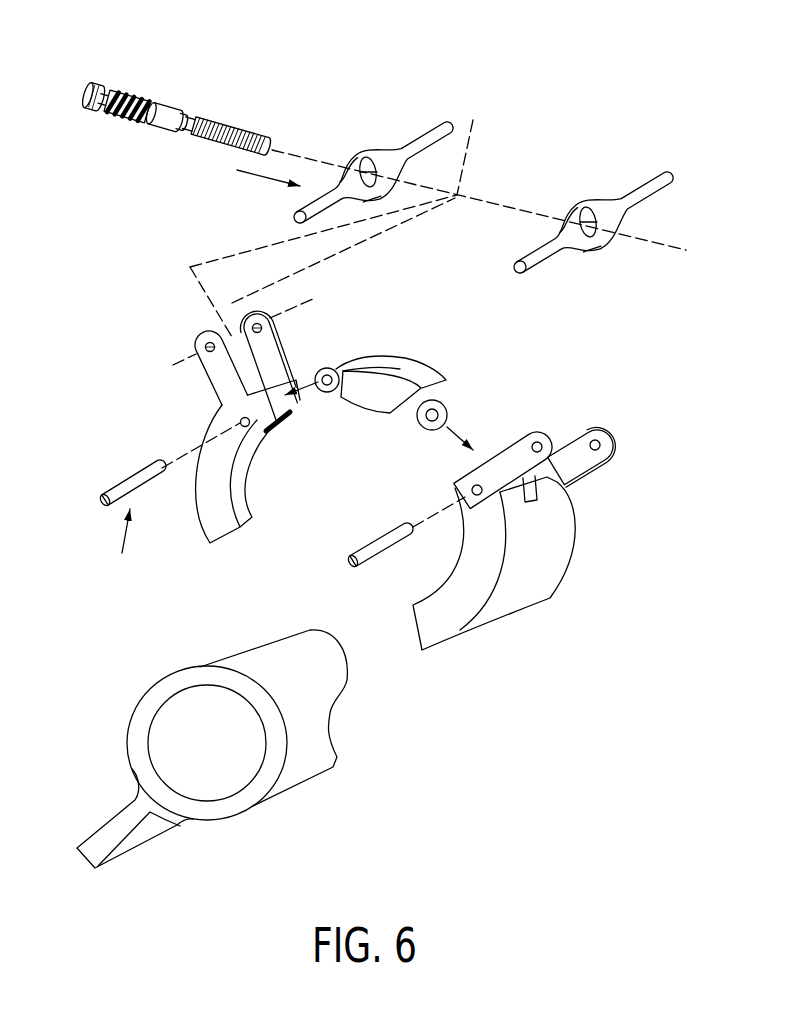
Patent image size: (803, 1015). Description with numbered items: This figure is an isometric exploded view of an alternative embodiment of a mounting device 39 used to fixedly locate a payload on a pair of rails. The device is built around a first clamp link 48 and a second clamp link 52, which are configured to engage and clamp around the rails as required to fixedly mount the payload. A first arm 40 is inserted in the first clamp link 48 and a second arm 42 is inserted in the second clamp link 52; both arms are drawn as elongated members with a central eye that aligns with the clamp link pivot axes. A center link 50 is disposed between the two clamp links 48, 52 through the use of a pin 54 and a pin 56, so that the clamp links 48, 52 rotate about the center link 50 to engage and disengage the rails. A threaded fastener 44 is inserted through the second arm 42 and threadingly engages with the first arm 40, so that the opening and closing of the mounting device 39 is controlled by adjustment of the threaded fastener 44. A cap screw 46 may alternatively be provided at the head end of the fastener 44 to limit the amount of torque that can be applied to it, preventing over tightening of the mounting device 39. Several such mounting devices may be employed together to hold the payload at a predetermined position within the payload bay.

The cap screw 46 is at (101, 88).
The threaded fastener 44 is at (240, 122).
The second arm 42 is at (446, 122).
The first arm 40 is at (667, 174).
The first clamp link 48 is at (222, 389).
The center link 50 is at (425, 362).
The second clamp link 52 is at (605, 468).
The mounting device 39 is at (596, 557).
The pin 54 is at (100, 501).
The pin 56 is at (349, 561).